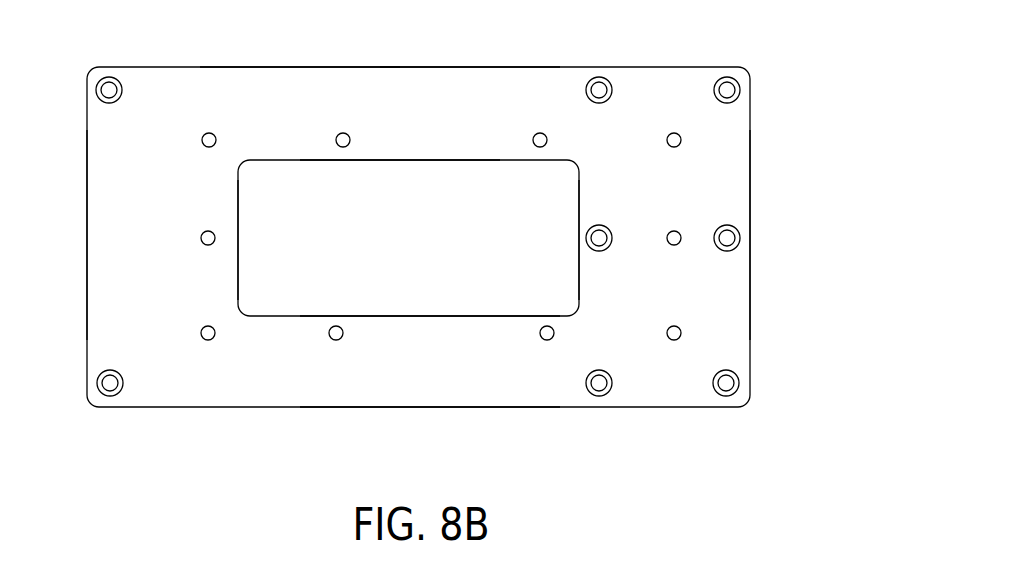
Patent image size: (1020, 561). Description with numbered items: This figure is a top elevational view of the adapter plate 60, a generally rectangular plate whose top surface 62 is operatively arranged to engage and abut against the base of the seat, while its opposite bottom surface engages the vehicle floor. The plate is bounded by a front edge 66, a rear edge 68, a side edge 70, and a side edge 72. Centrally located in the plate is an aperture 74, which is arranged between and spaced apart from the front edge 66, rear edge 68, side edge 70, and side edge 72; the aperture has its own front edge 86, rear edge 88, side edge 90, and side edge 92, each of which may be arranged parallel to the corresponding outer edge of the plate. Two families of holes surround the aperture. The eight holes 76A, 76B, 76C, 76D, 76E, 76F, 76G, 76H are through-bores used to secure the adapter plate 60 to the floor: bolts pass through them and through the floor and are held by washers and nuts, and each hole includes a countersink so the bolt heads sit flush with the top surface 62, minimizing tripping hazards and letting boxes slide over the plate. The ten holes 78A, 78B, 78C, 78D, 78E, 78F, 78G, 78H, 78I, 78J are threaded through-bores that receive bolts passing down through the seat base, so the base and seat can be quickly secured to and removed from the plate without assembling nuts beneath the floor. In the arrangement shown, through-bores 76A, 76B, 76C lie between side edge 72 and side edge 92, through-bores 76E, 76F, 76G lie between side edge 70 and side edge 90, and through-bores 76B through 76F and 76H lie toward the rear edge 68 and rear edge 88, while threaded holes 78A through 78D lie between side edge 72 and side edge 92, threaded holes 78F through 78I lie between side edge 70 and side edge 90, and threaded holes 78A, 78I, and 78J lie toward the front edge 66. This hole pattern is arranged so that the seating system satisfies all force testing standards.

The adapter plate 60 is at (842, 48).
The top surface 62 is at (248, 77).
The front edge 66 is at (87, 238).
The rear edge 68 is at (750, 315).
The side edge 70 is at (438, 407).
The side edge 72 is at (408, 66).
The aperture 74 is at (399, 304).
The hole 76A is at (100, 79).
The hole 76B is at (590, 79).
The hole 76C is at (718, 79).
The hole 76D is at (741, 238).
The hole 76E is at (722, 397).
The hole 76F is at (596, 397).
The hole 76G is at (107, 398).
The hole 76H is at (598, 252).
The threaded hole 78A is at (208, 132).
The threaded hole 78B is at (343, 133).
The threaded hole 78C is at (540, 133).
The threaded hole 78D is at (674, 133).
The threaded hole 78E is at (673, 245).
The threaded hole 78F is at (673, 342).
The threaded hole 78G is at (545, 342).
The threaded hole 78H is at (335, 340).
The threaded hole 78I is at (207, 340).
The threaded hole 78J is at (201, 238).
The front edge 86 is at (238, 262).
The rear edge 88 is at (578, 200).
The side edge 90 is at (458, 316).
The side edge 92 is at (363, 160).